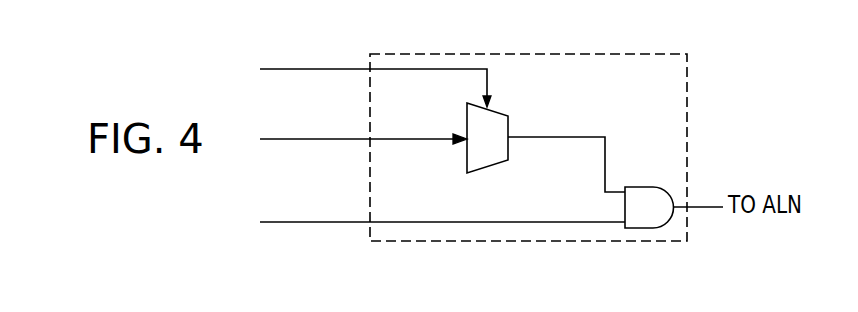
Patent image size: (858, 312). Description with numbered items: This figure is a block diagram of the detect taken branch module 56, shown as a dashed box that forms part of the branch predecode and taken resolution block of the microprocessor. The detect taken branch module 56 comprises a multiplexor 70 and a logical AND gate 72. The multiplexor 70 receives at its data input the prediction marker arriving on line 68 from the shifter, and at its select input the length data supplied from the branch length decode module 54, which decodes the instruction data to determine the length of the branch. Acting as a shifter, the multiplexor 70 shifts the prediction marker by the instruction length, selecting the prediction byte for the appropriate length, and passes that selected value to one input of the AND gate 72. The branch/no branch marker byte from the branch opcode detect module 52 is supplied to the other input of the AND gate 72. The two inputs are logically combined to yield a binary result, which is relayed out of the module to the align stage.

The branch opcode detect module 52 is at (442, 225).
The branch length decode module 54 is at (375, 74).
The detect taken branch module 56 is at (688, 97).
The line 68 is at (320, 138).
The multiplexor 70 is at (509, 116).
The logical AND gate 72 is at (640, 187).